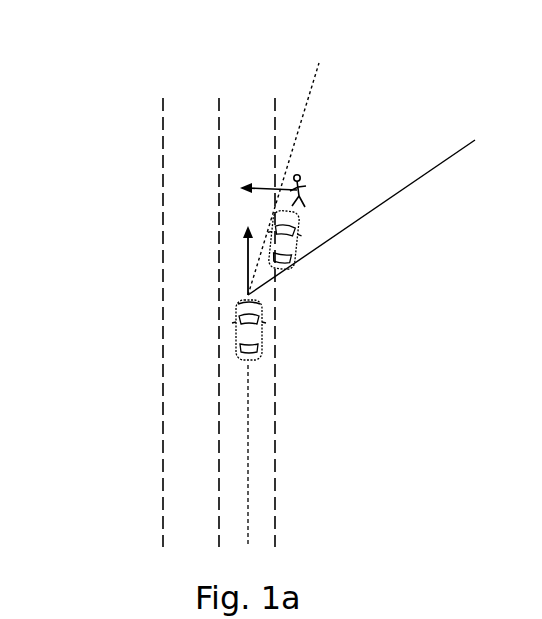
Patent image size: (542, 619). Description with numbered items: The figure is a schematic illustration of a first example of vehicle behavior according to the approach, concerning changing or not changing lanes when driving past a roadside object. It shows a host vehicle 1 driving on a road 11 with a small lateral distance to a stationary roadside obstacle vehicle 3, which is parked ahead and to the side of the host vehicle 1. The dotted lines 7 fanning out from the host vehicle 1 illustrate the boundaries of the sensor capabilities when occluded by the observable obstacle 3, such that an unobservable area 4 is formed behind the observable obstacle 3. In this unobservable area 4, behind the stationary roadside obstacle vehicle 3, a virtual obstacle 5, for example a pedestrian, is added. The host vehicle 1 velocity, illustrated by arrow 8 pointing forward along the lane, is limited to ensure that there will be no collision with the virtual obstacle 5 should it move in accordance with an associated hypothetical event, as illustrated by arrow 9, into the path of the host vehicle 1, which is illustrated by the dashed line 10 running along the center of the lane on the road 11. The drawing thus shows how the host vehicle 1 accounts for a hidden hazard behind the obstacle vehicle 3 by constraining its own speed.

The host vehicle 1 is at (257, 335).
The stationary roadside obstacle vehicle 3 is at (285, 245).
The unobservable area 4 is at (371, 163).
The virtual obstacle 5 is at (307, 190).
The dotted lines 7 is at (315, 72).
The arrow 8 is at (247, 262).
The arrow 9 is at (260, 188).
The dashed line 10 is at (249, 405).
The road 11 is at (157, 124).